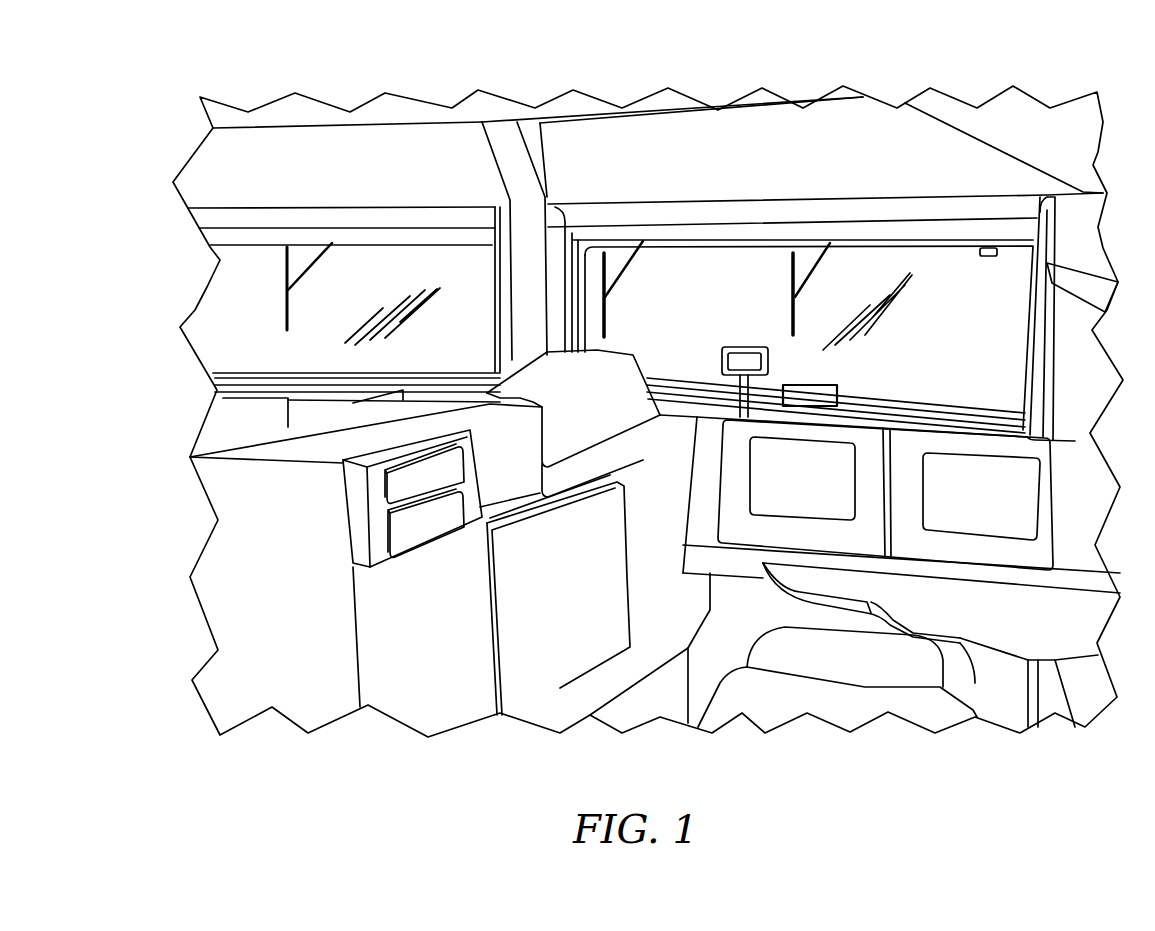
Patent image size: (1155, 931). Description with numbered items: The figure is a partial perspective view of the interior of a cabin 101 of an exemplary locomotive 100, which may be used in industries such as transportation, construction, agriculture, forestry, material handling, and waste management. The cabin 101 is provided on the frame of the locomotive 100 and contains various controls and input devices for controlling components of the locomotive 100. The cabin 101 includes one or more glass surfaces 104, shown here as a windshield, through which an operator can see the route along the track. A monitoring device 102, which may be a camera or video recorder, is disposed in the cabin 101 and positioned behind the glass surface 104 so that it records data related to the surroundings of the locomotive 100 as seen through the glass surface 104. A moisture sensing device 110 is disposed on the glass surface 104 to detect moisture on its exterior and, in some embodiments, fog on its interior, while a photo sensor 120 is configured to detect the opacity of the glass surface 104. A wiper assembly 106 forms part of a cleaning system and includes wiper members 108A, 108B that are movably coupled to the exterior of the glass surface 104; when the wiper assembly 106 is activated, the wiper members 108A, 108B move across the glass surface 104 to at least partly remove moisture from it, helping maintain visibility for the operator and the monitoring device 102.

The locomotive 100 is at (138, 90).
The cabin 101 is at (214, 182).
The monitoring device 102 is at (747, 347).
The glass surface 104 is at (833, 316).
The wiper assembly 106 is at (622, 290).
The wiper member 108A is at (604, 253).
The wiper member 108B is at (800, 253).
The moisture sensing device 110 is at (980, 250).
The photo sensor 120 is at (838, 397).